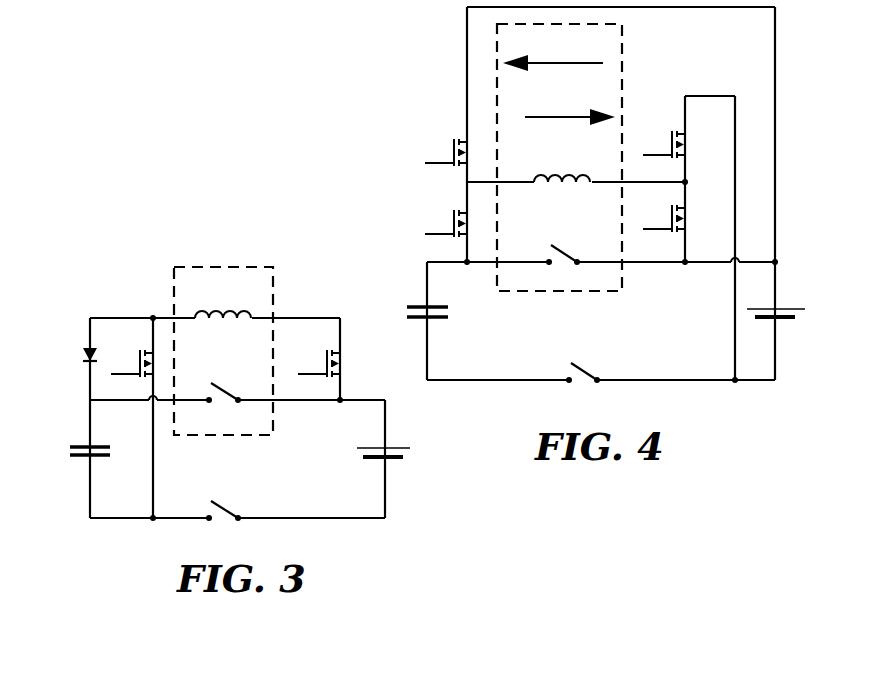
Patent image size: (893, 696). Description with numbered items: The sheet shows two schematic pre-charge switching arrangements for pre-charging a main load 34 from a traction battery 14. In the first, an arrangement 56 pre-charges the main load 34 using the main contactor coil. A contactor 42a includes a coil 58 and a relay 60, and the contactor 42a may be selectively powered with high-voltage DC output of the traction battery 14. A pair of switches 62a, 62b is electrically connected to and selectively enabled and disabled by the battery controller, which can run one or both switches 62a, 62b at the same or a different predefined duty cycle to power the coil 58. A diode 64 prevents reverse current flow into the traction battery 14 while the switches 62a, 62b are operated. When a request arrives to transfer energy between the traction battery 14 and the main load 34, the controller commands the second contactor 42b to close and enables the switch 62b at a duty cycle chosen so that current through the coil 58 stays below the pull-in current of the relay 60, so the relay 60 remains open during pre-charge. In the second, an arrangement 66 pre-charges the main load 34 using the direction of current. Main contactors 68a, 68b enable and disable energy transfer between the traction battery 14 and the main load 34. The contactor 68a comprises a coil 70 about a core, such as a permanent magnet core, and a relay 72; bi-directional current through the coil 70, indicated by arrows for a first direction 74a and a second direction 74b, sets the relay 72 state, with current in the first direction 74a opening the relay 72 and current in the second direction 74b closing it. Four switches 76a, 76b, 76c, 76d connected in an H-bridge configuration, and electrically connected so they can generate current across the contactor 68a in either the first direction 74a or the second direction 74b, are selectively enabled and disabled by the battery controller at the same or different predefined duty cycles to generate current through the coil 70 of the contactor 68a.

In FIG. 3, the traction battery 14 is at (402, 447).
In FIG. 4, the traction battery 14 is at (787, 307).
In FIG. 3, the main load 34 is at (95, 445).
In FIG. 4, the main load 34 is at (437, 305).
In FIG. 3, the contactor 42a is at (200, 235).
In FIG. 3, the contactor 42b is at (225, 504).
In FIG. 3, the arrangement 56 is at (84, 272).
In FIG. 3, the coil 58 is at (215, 312).
In FIG. 3, the relay 60 is at (222, 387).
In FIG. 3, the switch 62a is at (149, 350).
In FIG. 3, the switch 62b is at (337, 350).
In FIG. 3, the diode 64 is at (88, 347).
In FIG. 4, the arrangement 66 is at (436, 27).
In FIG. 4, the main contactor 68a is at (649, 42).
In FIG. 4, the main contactor 68b is at (590, 367).
In FIG. 4, the coil 70 is at (558, 175).
In FIG. 4, the relay 72 is at (563, 246).
In FIG. 4, the first direction 74a is at (560, 62).
In FIG. 4, the second direction 74b is at (554, 116).
In FIG. 4, the switch 76a is at (460, 138).
In FIG. 4, the switch 76b is at (460, 210).
In FIG. 4, the switch 76c is at (679, 131).
In FIG. 4, the switch 76d is at (689, 216).